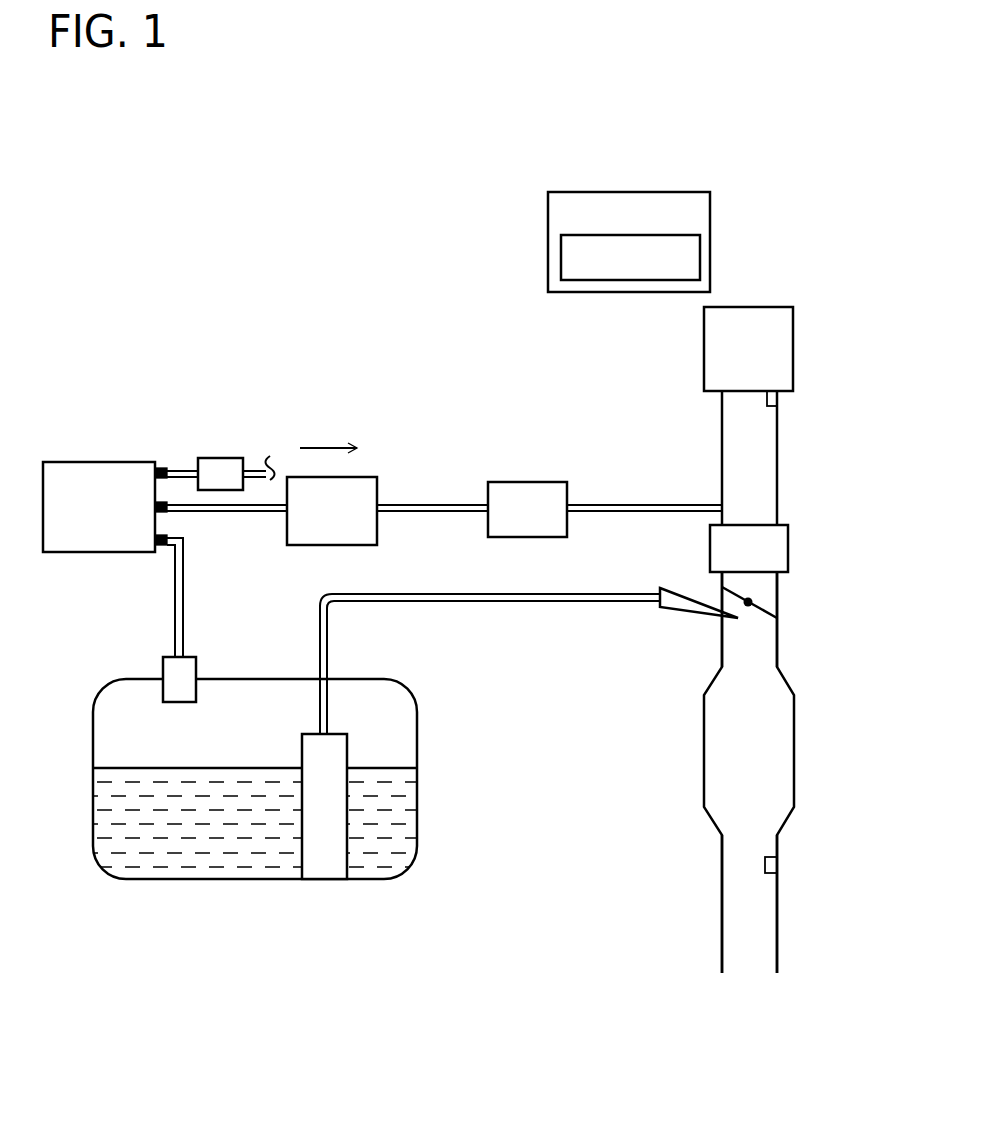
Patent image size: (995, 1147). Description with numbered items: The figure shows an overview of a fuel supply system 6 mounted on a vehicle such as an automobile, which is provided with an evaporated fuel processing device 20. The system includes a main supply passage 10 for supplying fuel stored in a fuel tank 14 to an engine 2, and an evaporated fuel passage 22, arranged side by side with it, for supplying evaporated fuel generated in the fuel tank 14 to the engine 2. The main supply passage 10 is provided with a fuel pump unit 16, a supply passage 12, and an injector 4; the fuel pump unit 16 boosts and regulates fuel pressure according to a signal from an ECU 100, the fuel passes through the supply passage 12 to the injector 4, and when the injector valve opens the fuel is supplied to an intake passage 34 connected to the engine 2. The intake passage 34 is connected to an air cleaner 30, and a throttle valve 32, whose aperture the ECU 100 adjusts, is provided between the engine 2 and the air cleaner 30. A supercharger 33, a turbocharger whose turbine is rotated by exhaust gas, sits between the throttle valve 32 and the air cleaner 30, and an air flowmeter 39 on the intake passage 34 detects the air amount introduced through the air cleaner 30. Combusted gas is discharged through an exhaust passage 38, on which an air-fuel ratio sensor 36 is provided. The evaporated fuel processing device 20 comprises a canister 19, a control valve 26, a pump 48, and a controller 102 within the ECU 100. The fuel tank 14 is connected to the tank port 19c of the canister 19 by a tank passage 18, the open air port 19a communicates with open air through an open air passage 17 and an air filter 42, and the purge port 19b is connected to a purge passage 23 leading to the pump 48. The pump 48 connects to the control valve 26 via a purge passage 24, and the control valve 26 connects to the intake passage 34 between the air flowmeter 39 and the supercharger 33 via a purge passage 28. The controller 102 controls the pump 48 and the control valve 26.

The engine 2 is at (793, 757).
The injector 4 is at (678, 602).
The fuel supply system 6 is at (343, 355).
The main supply passage 10 is at (587, 613).
The supply passage 12 is at (522, 596).
The fuel tank 14 is at (410, 788).
The fuel pump unit 16 is at (330, 847).
The open air passage 17 is at (182, 472).
The tank passage 18 is at (182, 623).
The canister 19 is at (110, 462).
The open air port 19a is at (160, 467).
The purge port 19b is at (162, 513).
The tank port 19c is at (162, 550).
The evaporated fuel processing device 20 is at (400, 475).
The evaporated fuel passage 22 is at (70, 442).
The purge passage 23 is at (257, 508).
The purge passage 24 is at (433, 507).
The control valve 26 is at (527, 482).
The purge passage 28 is at (687, 508).
The air cleaner 30 is at (782, 350).
The throttle valve 32 is at (768, 610).
The supercharger 33 is at (777, 552).
The intake passage 34 is at (778, 590).
The air-fuel ratio sensor 36 is at (777, 865).
The exhaust passage 38 is at (780, 908).
The air flowmeter 39 is at (773, 398).
The air filter 42 is at (220, 458).
The pump 48 is at (360, 477).
The ECU 100 is at (712, 212).
The controller 102 is at (700, 256).